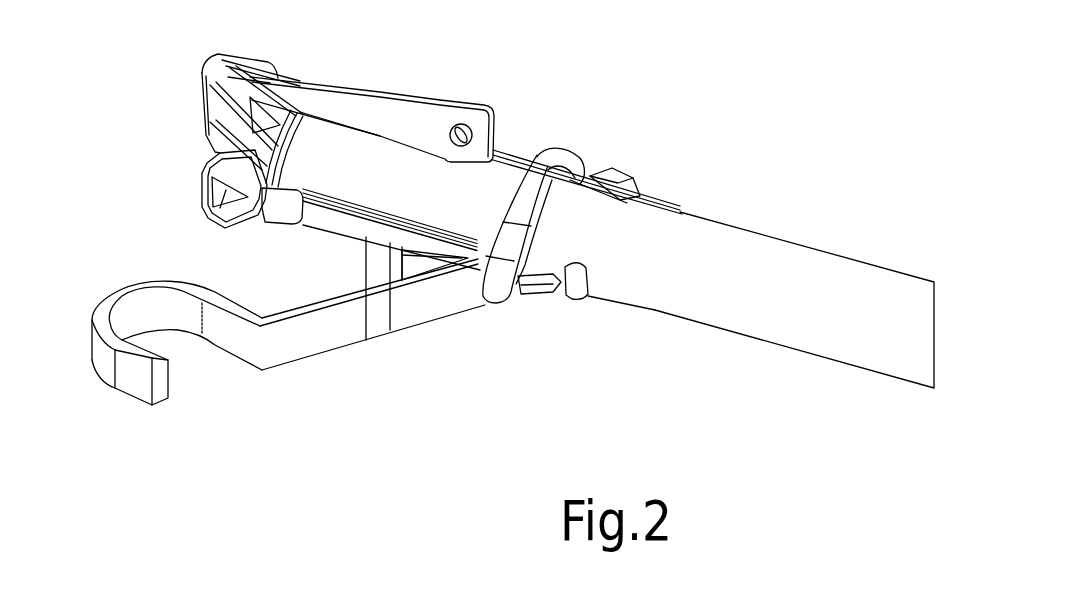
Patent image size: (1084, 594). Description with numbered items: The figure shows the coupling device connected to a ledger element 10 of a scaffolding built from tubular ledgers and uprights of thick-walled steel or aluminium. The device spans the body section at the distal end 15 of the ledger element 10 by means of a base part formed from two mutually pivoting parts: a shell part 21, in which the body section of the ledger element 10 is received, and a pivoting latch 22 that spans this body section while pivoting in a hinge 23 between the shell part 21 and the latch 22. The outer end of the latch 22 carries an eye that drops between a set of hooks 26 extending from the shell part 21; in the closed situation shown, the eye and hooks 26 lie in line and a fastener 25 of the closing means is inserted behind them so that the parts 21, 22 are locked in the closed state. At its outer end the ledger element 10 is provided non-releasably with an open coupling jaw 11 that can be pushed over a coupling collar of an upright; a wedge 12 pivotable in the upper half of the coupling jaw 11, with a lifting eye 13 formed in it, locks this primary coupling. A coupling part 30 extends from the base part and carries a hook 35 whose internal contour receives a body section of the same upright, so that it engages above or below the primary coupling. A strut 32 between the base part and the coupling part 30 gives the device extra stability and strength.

The ledger element 10 is at (750, 263).
The coupling jaw 11 is at (207, 197).
The wedge 12 is at (413, 115).
The lifting eye 13 is at (478, 130).
The body section at distal end 15 is at (378, 155).
The shell part 21 is at (297, 222).
The pivoting latch 22 is at (570, 170).
The hinge 23 is at (528, 300).
The fastener 25 is at (673, 205).
The hooks 26 is at (623, 182).
The coupling part 30 is at (370, 320).
The strut 32 is at (377, 275).
The hook 35 is at (148, 377).